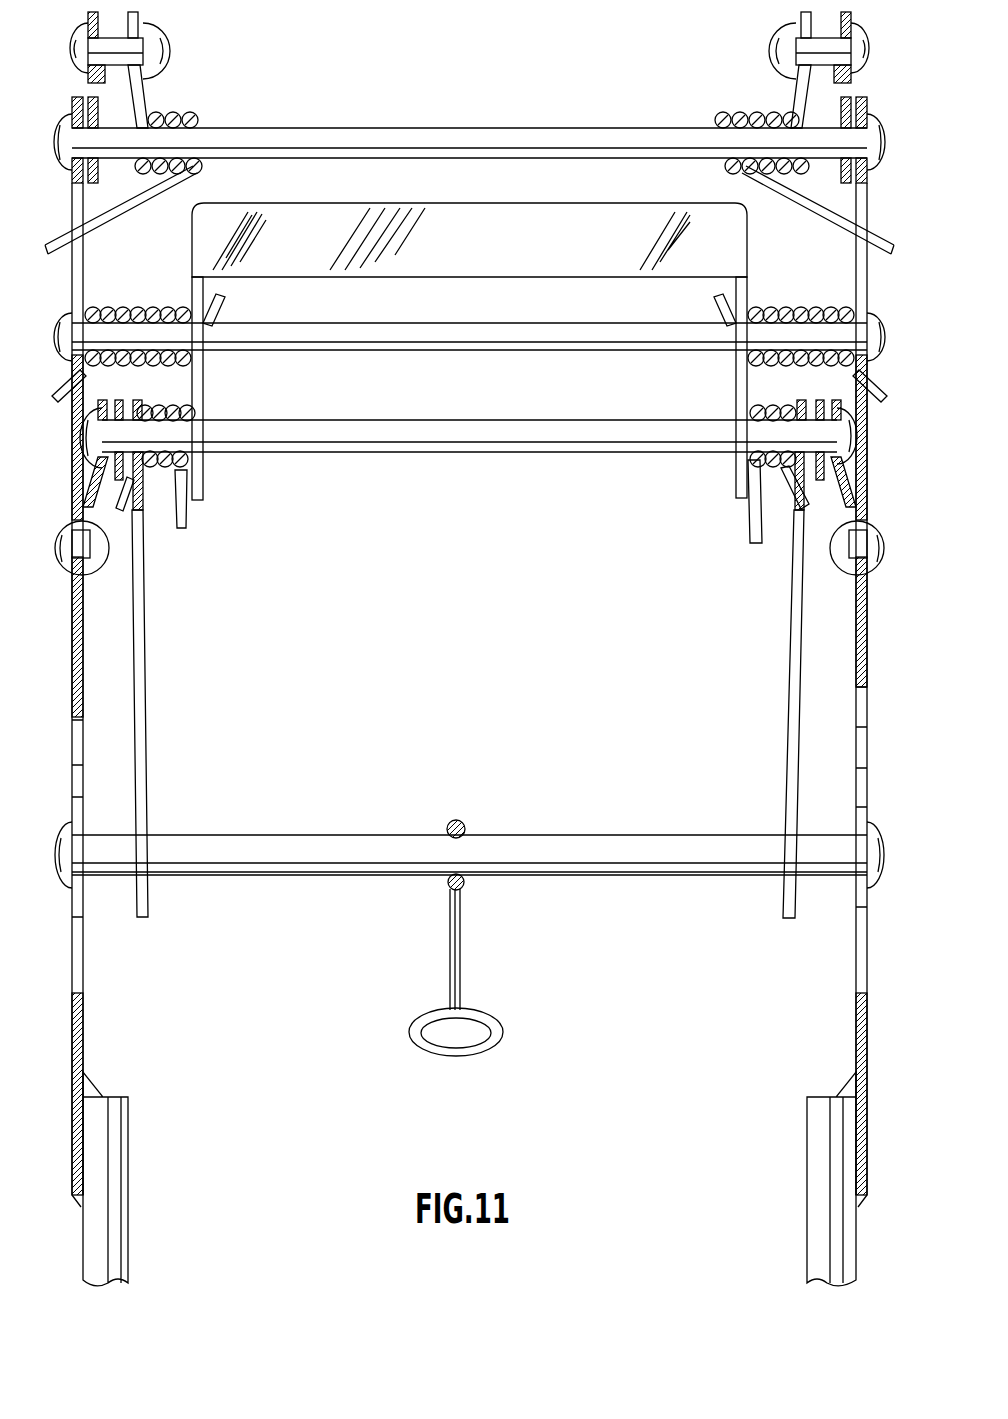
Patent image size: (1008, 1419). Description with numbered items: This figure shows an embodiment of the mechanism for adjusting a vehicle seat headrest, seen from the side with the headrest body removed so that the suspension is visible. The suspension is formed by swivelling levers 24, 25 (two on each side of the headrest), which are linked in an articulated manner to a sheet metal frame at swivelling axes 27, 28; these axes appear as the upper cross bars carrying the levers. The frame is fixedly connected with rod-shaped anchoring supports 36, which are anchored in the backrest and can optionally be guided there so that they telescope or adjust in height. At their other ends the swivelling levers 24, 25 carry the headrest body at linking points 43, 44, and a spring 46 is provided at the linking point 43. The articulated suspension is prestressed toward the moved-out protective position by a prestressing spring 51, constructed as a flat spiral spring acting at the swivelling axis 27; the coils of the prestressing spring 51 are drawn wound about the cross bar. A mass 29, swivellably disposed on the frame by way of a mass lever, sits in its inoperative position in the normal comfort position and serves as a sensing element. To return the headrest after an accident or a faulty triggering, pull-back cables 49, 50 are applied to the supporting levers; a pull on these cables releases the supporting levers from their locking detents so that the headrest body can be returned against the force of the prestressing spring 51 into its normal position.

The swivelling lever 24 is at (82, 270).
The swivelling lever 25 is at (149, 741).
The swivelling axis 27 is at (284, 136).
The swivelling axis 28 is at (389, 444).
The mass 29 is at (455, 212).
The anchoring support 36 is at (120, 1149).
The linking point 43 is at (874, 318).
The linking point 44 is at (150, 833).
The spring 46 is at (222, 306).
The pull-back cable 49 is at (448, 935).
The pull-back cable 50 is at (462, 937).
The prestressing spring 51 is at (175, 110).